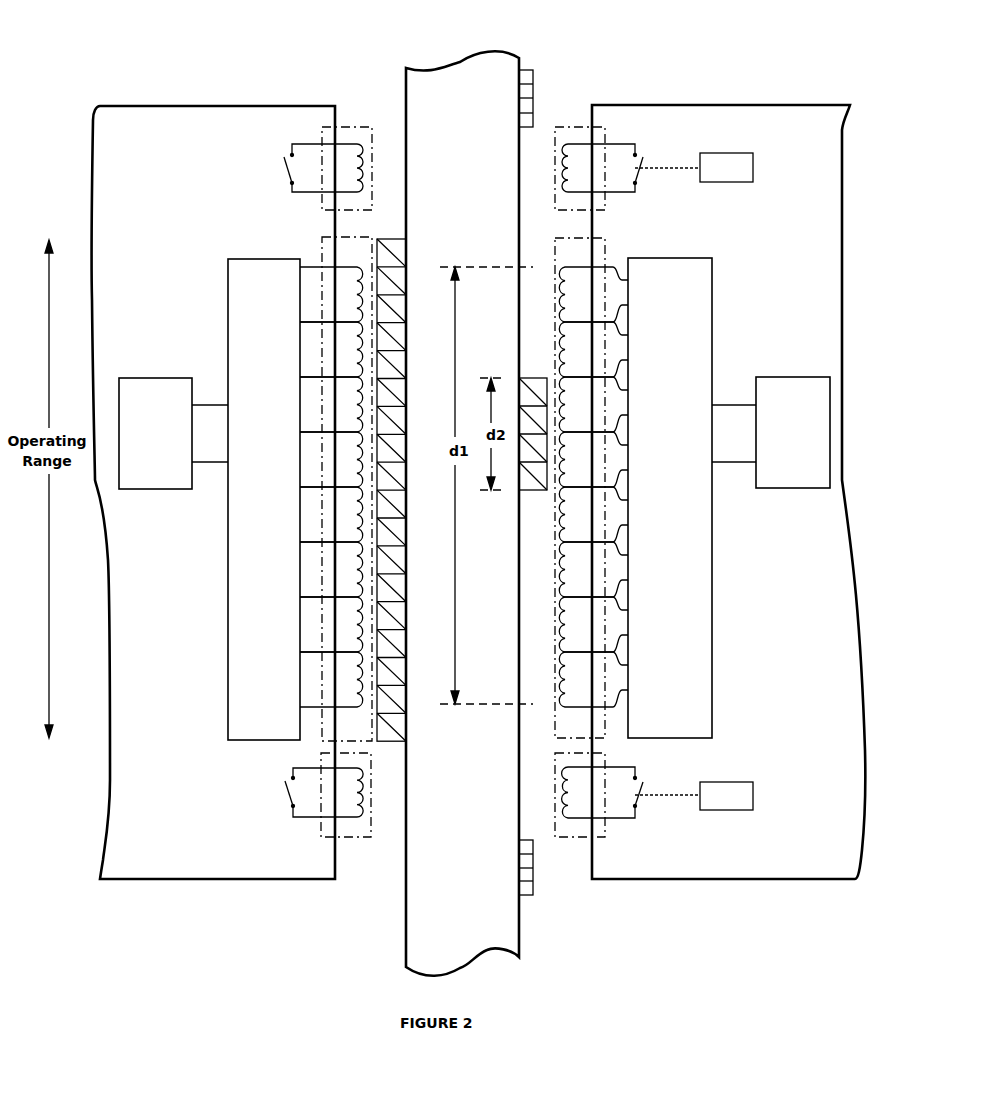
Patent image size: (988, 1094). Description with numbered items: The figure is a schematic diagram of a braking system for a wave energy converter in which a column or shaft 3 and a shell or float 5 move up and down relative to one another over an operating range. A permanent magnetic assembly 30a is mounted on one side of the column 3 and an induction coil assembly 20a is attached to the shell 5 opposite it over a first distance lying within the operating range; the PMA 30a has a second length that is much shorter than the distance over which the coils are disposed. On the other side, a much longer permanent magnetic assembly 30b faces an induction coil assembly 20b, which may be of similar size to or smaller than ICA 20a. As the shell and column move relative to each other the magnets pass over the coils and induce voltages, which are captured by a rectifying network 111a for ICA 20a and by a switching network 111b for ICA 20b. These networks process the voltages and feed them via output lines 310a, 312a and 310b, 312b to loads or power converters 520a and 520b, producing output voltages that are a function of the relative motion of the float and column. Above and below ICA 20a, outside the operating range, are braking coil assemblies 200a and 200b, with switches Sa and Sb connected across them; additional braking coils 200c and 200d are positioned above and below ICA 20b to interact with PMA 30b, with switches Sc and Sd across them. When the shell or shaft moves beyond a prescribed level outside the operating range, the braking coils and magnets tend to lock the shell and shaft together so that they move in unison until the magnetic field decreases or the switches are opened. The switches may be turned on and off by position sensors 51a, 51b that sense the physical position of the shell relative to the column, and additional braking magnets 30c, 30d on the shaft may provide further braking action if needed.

The column 3 is at (457, 68).
The shell 5 is at (213, 106).
The permanent magnetic assembly 30a is at (533, 378).
The permanent magnetic assembly 30b is at (392, 238).
The braking magnet 30c is at (533, 895).
The braking magnet 30d is at (533, 70).
The induction coil assembly 20a is at (600, 238).
The induction coil assembly 20b is at (328, 238).
The braking coil assembly 200a is at (563, 127).
The braking coil assembly 200b is at (563, 837).
The braking coil 200c is at (343, 127).
The braking coil 200d is at (359, 837).
The rectifying network 111a is at (685, 258).
The switching network 111b is at (247, 259).
The output line 310a is at (740, 405).
The output line 310b is at (203, 405).
The output line 312a is at (740, 462).
The output line 312b is at (215, 462).
The load 520a is at (812, 488).
The load 520b is at (146, 489).
The position sensor 51a is at (730, 153).
The position sensor 51b is at (730, 782).